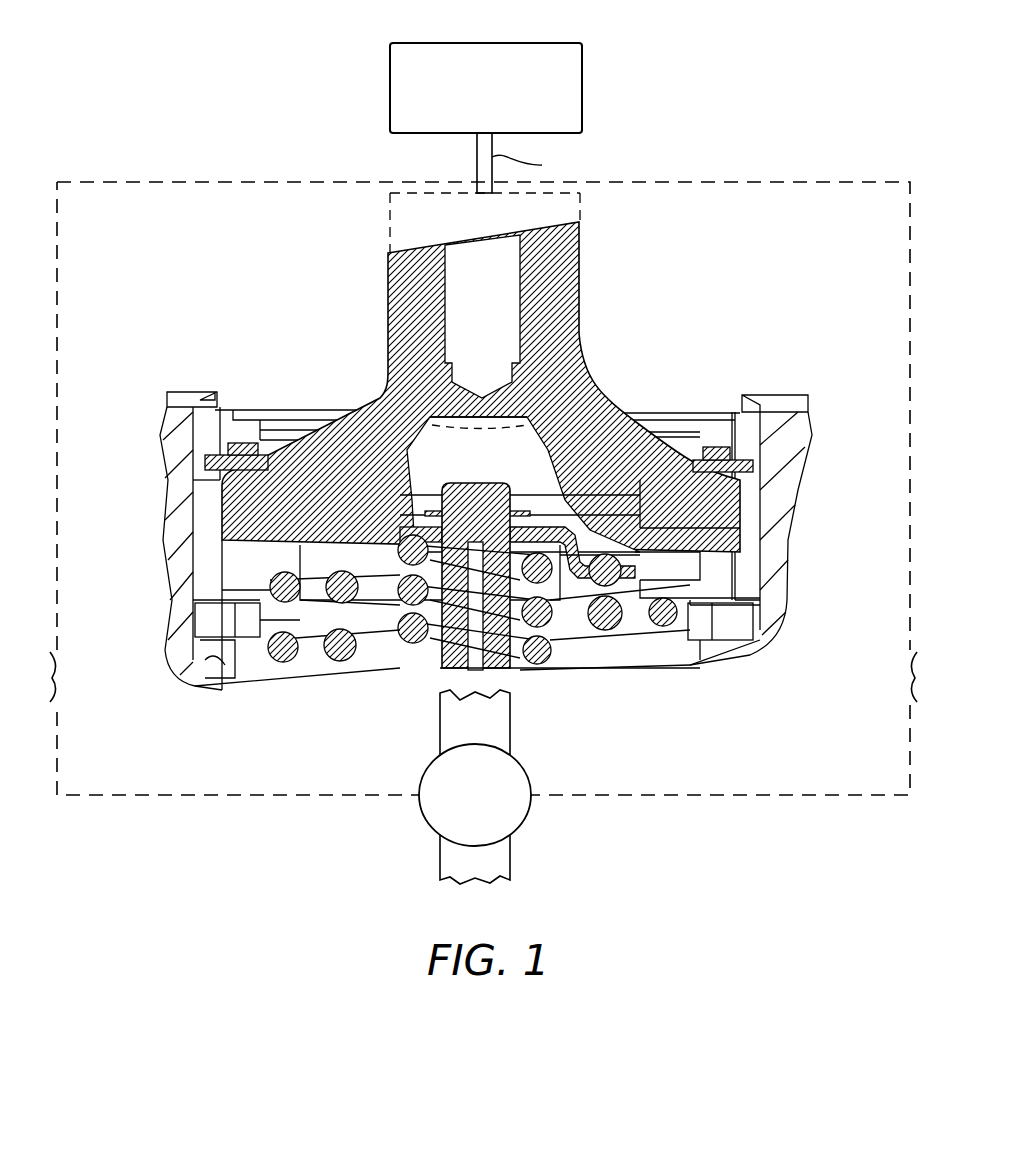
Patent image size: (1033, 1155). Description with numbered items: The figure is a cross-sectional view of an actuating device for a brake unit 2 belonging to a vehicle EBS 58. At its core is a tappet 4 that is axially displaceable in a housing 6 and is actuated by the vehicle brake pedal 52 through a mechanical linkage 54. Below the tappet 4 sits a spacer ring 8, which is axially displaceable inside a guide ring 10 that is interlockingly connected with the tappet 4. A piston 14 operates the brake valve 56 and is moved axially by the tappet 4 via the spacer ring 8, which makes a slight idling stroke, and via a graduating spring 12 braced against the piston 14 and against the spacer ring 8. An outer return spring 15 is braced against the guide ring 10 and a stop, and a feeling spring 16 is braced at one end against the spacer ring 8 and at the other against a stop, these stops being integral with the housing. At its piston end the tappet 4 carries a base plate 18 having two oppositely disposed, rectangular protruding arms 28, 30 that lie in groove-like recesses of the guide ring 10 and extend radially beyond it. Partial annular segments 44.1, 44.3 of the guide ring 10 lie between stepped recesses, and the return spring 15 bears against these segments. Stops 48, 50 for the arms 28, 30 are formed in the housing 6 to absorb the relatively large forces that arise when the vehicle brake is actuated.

The brake unit 2 is at (763, 300).
The tappet 4 is at (580, 337).
The housing 6 is at (780, 440).
The spacer ring 8 is at (700, 565).
The guide ring 10 is at (700, 580).
The graduating spring 12 is at (540, 656).
The piston 14 is at (445, 668).
The outer return spring 15 is at (283, 662).
The feeling spring 16 is at (335, 655).
The base plate 18 is at (205, 553).
The protruding arm 28 is at (735, 490).
The protruding arm 30 is at (225, 487).
The segment of partial annular shape 44.1 is at (345, 661).
The segment of partial annular shape 44.3 is at (655, 624).
The stop 48 is at (196, 672).
The stop 50 is at (730, 640).
The vehicle brake pedal 52 is at (390, 64).
The mechanical linkage 54 is at (477, 176).
The brake valve 56 is at (522, 812).
The EBS 58 is at (178, 182).